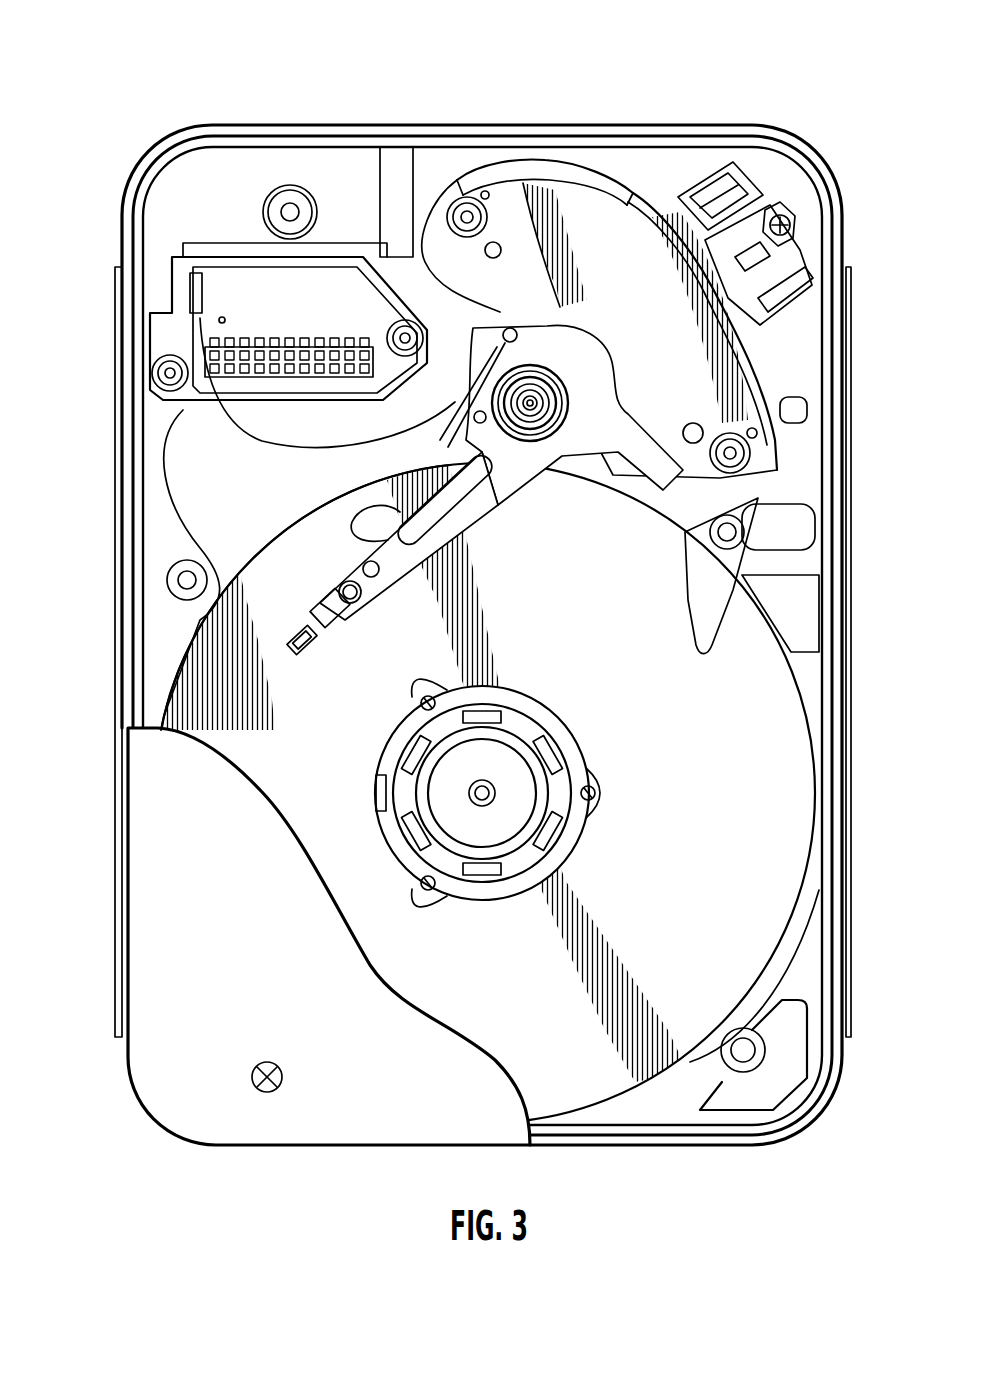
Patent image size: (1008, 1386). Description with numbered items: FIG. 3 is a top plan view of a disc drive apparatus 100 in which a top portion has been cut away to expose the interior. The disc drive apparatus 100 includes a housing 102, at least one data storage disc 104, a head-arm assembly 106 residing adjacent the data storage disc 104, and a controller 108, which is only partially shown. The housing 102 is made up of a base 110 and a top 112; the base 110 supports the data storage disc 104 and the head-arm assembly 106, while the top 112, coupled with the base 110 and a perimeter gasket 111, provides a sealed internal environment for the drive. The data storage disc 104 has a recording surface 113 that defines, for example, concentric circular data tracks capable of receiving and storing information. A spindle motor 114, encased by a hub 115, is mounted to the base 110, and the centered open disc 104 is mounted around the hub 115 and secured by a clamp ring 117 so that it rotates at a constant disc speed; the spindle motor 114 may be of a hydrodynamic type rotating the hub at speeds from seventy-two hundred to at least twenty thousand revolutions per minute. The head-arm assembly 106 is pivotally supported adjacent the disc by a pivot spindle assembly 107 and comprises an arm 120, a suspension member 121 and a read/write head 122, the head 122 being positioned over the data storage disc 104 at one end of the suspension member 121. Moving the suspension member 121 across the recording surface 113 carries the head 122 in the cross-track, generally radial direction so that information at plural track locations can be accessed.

The disc drive apparatus 100 is at (492, 66).
The housing 102 is at (120, 968).
The data storage disc 104 is at (818, 794).
The head-arm assembly 106 is at (650, 200).
The pivot spindle assembly 107 is at (540, 420).
The controller 108 is at (203, 363).
The base 110 is at (165, 535).
The perimeter gasket 111 is at (750, 128).
The top 112 is at (356, 1087).
The recording surface 113 is at (750, 880).
The spindle motor 114 is at (517, 795).
The hub 115 is at (527, 723).
The clamp ring 117 is at (556, 862).
The arm 120 is at (352, 530).
The suspension member 121 is at (380, 592).
The read/write head 122 is at (165, 713).